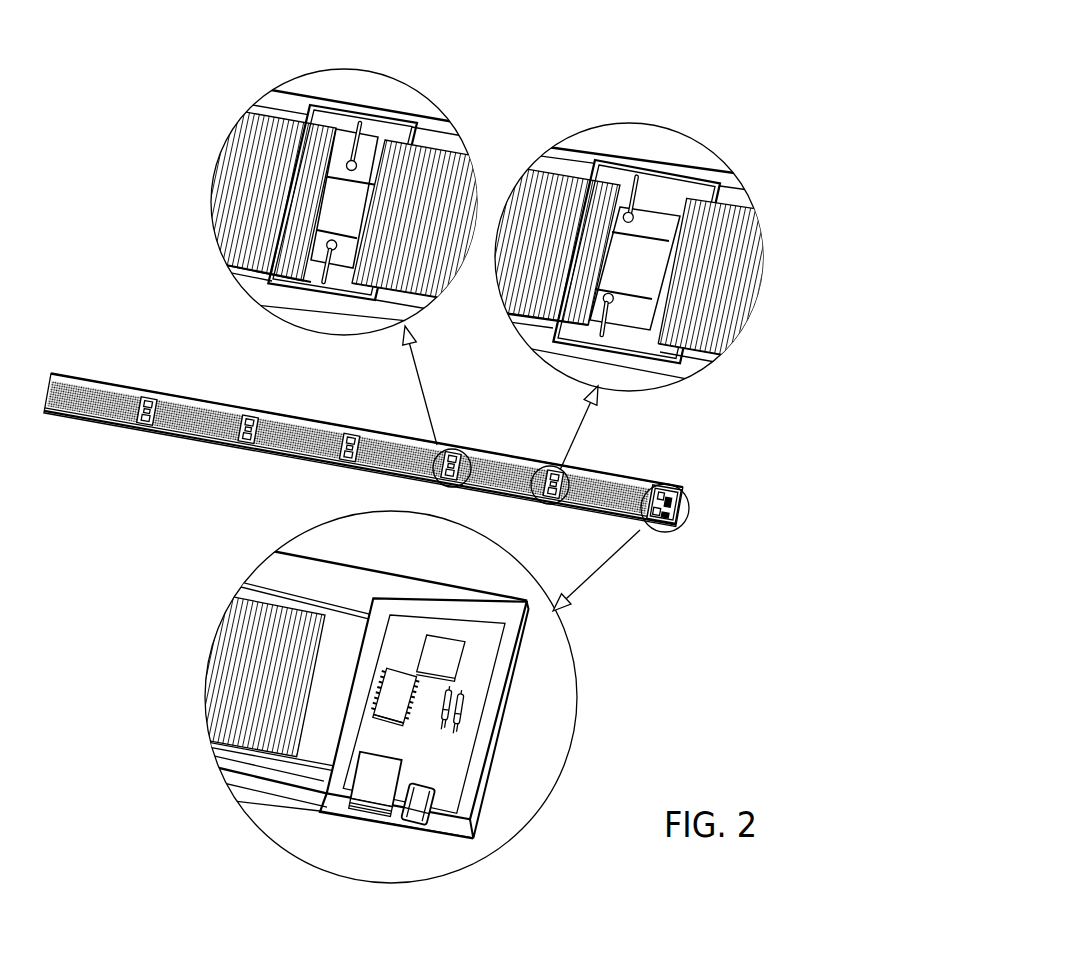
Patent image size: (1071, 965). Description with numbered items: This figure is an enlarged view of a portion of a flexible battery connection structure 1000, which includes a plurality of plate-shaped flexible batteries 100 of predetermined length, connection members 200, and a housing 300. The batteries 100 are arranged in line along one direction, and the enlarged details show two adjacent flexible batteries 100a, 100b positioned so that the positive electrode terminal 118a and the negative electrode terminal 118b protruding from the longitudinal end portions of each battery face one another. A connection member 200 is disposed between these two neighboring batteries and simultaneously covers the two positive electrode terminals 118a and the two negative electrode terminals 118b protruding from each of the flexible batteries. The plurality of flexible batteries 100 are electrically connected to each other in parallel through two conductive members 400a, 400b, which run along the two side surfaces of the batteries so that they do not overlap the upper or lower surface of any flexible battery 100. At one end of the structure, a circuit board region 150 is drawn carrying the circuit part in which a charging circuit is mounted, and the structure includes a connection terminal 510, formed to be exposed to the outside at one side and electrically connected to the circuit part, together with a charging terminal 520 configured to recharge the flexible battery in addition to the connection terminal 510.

The flexible battery connection structure 1000 is at (158, 289).
The flexible battery 100 is at (218, 667).
The flexible battery 100a is at (222, 158).
The flexible battery 100b is at (722, 300).
The positive electrode terminal 118a is at (362, 123).
The negative electrode terminal 118b is at (323, 283).
The control board 150 is at (503, 698).
The connection member 200 is at (351, 110).
The housing 300 is at (350, 304).
The conductive member 400a is at (238, 279).
The conductive member 400b is at (298, 95).
The connection terminal 510 is at (360, 811).
The charging terminal 520 is at (440, 820).